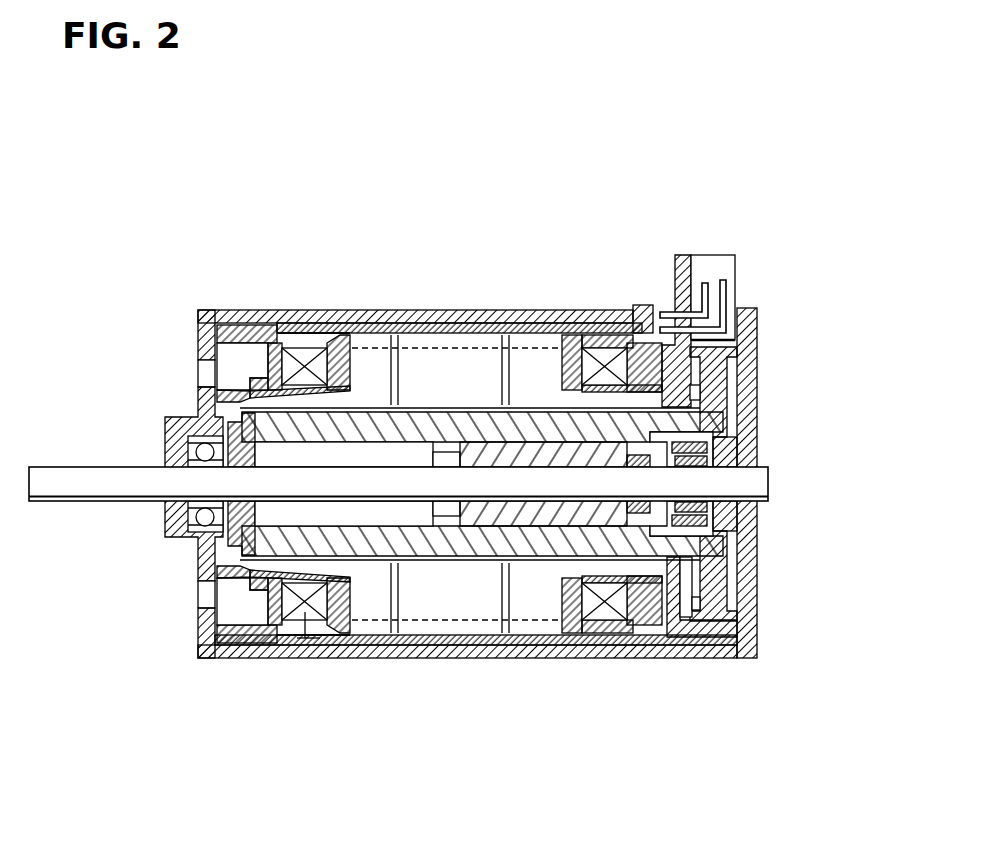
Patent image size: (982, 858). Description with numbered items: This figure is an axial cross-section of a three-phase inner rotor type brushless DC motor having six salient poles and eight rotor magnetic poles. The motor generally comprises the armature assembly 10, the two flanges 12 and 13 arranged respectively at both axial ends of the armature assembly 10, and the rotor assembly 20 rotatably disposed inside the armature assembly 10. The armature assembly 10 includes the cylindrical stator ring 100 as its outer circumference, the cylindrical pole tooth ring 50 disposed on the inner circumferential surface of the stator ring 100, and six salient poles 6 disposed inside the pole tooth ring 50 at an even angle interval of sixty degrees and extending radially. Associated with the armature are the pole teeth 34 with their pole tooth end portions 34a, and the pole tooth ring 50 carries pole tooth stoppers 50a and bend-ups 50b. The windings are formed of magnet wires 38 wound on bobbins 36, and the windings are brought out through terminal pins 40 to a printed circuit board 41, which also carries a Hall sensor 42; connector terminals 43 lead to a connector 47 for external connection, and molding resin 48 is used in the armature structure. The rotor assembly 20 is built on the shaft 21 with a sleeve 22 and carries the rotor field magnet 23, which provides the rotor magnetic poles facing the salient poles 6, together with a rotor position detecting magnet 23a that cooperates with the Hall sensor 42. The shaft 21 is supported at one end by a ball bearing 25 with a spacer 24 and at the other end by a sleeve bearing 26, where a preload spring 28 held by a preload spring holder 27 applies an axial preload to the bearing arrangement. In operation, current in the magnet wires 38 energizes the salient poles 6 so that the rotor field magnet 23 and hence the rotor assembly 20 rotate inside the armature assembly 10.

The armature assembly 10 is at (322, 274).
The flange 12 is at (198, 342).
The flange 13 is at (757, 338).
The rotor assembly 20 is at (510, 606).
The shaft 21 is at (94, 480).
The sleeve 22 is at (513, 660).
The rotor field magnet 23 is at (457, 660).
The rotor position detecting magnet 23a is at (727, 660).
The spacer 24 is at (197, 601).
The ball bearing 25 is at (195, 538).
The sleeve bearing 26 is at (737, 457).
The preload spring holder 27 is at (690, 527).
The preload spring 28 is at (707, 503).
The pole teeth 34 is at (536, 308).
The pole tooth end portions 34a is at (405, 308).
The bobbins 36 is at (580, 308).
The magnet wires 38 is at (617, 308).
The terminal pins 40 is at (457, 494).
The printed circuit board 41 is at (684, 255).
The Hall sensor 42 is at (700, 395).
The connector terminals 43 is at (722, 291).
The connector 47 is at (730, 255).
The molding resin 48 is at (236, 392).
The cylindrical pole tooth ring 50 is at (580, 660).
The pole tooth stoppers 50a is at (438, 308).
The bend-ups 50b is at (462, 348).
The salient poles 6 is at (488, 372).
The cylindrical stator ring 100 is at (240, 660).